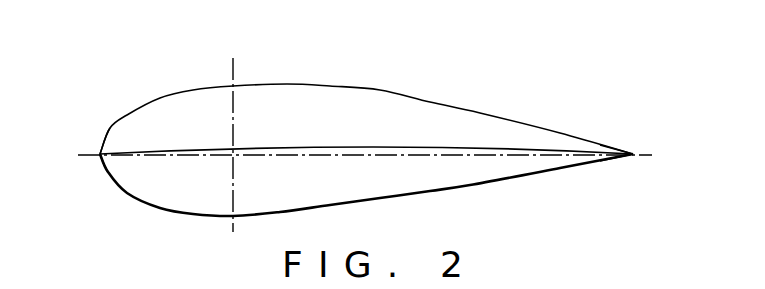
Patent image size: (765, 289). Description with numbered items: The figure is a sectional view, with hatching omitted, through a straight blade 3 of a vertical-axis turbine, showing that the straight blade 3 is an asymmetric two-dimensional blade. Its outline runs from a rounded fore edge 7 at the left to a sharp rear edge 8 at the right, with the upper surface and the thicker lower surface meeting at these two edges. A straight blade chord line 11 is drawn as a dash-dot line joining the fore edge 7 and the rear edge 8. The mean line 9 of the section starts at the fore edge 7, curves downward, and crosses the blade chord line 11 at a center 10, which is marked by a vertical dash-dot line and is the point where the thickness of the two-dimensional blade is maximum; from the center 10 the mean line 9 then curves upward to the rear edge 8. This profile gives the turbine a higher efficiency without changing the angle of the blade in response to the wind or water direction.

The straight blade 3 is at (395, 86).
The fore edge 7 is at (100, 155).
The rear edge 8 is at (633, 154).
The mean line 9 is at (362, 147).
The center 10 is at (233, 153).
The blade chord line 11 is at (290, 157).